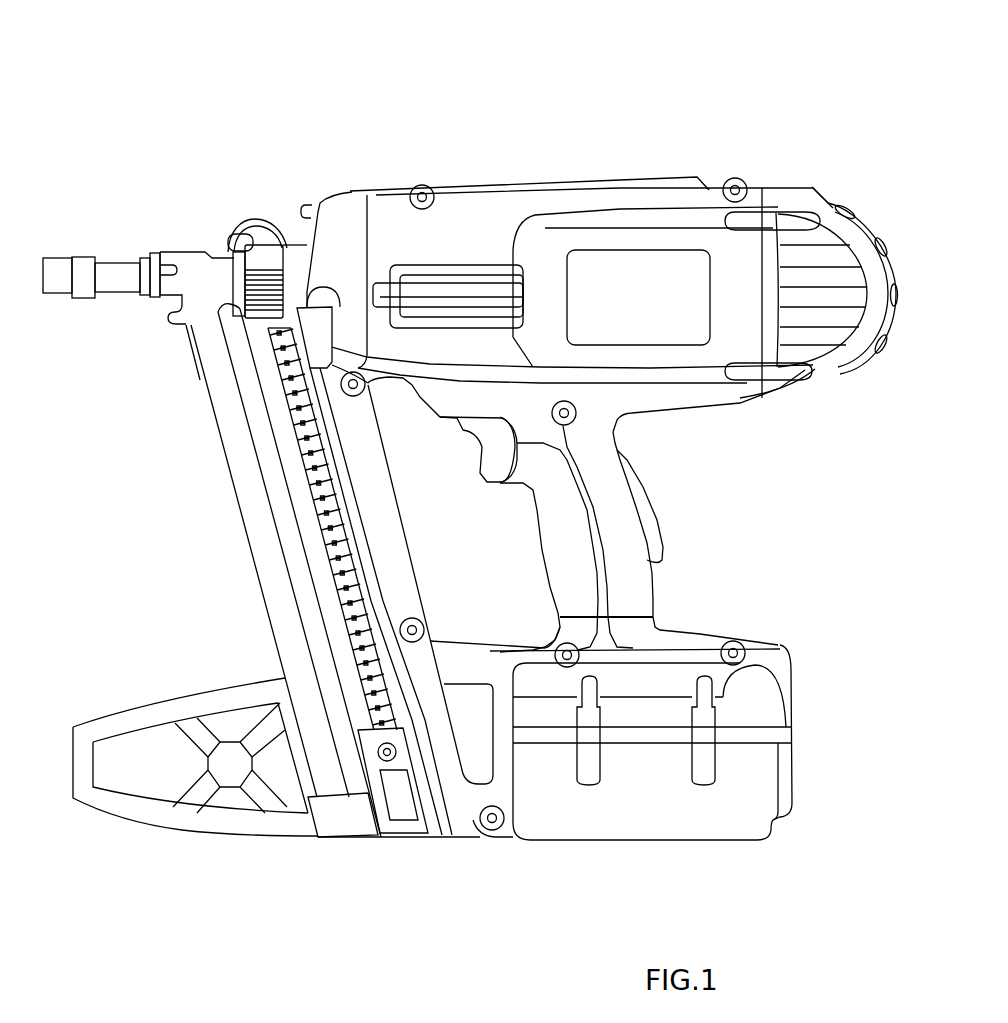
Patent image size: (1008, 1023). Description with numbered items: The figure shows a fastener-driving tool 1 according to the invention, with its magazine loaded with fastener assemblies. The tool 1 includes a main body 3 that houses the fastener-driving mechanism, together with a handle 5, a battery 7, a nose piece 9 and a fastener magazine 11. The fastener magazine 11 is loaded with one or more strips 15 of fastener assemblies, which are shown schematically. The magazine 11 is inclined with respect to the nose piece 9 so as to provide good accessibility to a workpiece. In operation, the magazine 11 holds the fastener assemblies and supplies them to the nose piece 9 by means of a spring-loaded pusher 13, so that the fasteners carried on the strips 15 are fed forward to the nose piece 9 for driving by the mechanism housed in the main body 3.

The fastener-driving tool 1 is at (543, 98).
The main body 3 is at (605, 200).
The handle 5 is at (640, 585).
The battery 7 is at (758, 707).
The nose piece 9 is at (85, 260).
The fastener magazine 11 is at (263, 543).
The spring-loaded pusher 13 is at (402, 753).
The strips of fastener assemblies 15 is at (303, 452).